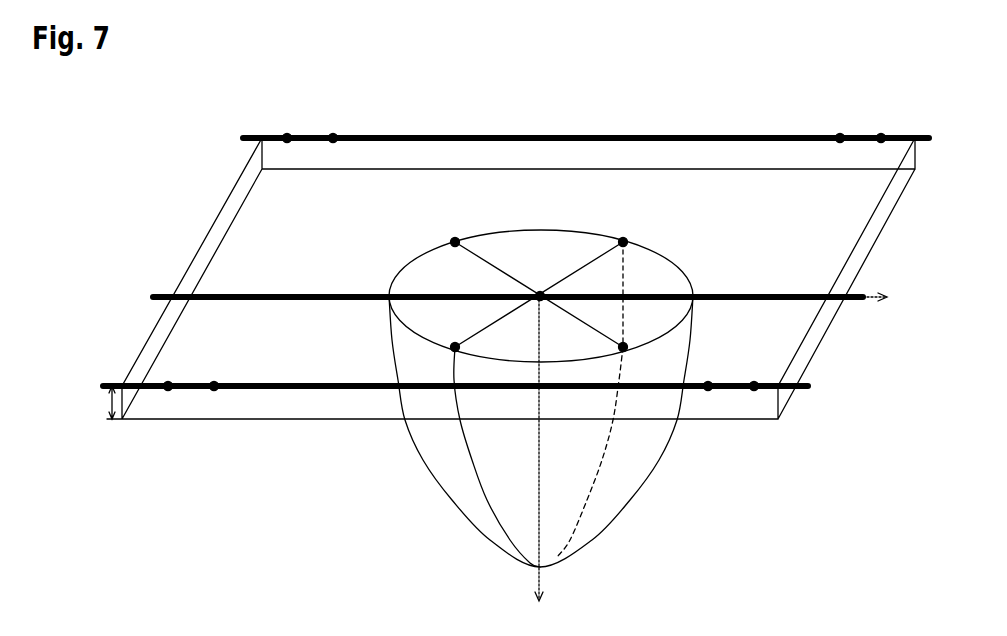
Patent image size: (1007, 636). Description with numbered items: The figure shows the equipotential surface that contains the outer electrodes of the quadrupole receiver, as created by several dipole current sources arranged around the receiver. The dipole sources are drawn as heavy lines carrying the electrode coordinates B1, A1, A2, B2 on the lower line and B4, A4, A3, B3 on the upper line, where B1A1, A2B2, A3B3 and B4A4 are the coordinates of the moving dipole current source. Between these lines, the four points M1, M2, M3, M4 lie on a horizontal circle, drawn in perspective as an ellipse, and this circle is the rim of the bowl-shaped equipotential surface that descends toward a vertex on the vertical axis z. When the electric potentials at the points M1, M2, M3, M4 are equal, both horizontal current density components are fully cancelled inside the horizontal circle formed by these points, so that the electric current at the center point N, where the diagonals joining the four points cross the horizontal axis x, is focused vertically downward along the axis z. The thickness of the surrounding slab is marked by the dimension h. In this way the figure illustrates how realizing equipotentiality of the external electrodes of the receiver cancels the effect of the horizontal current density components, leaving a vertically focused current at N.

The dipole source electrode A1 is at (216, 373).
The dipole source electrode B1 is at (173, 373).
The dipole source electrode A2 is at (711, 373).
The dipole source electrode B2 is at (751, 373).
The dipole source electrode A3 is at (834, 125).
The dipole source electrode B3 is at (877, 125).
The dipole source electrode A4 is at (332, 124).
The dipole source electrode B4 is at (287, 124).
The outer electrode point M1 is at (438, 360).
The outer electrode point M2 is at (636, 360).
The outer electrode point M3 is at (630, 230).
The outer electrode point M4 is at (438, 230).
The focusing point N is at (541, 286).
The slab thickness h is at (104, 402).
The x axis x is at (880, 303).
The z axis z is at (538, 460).